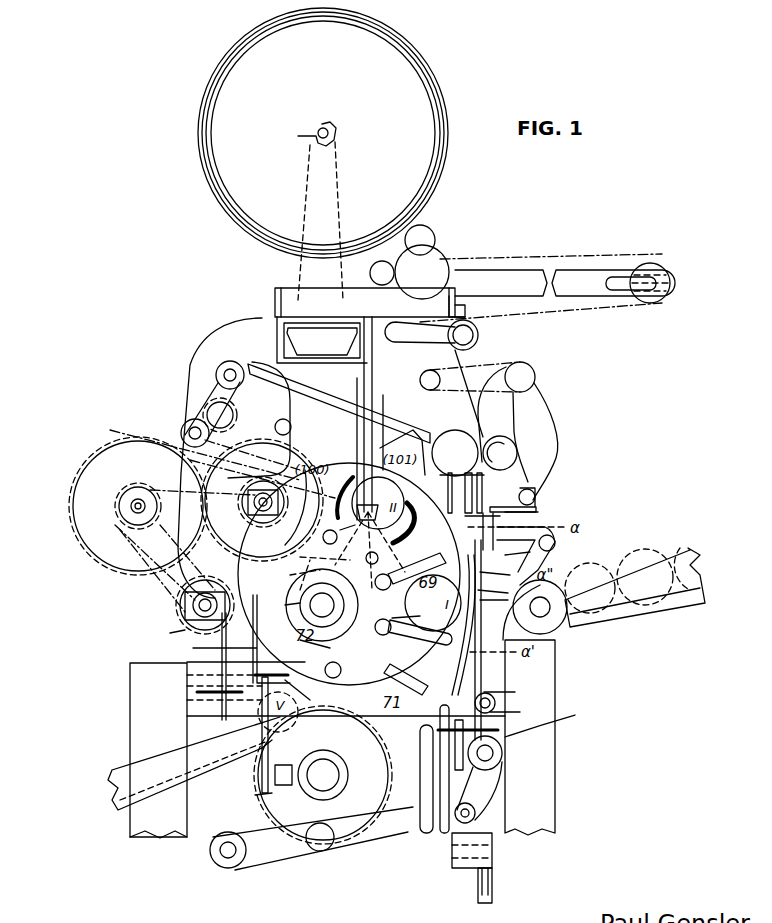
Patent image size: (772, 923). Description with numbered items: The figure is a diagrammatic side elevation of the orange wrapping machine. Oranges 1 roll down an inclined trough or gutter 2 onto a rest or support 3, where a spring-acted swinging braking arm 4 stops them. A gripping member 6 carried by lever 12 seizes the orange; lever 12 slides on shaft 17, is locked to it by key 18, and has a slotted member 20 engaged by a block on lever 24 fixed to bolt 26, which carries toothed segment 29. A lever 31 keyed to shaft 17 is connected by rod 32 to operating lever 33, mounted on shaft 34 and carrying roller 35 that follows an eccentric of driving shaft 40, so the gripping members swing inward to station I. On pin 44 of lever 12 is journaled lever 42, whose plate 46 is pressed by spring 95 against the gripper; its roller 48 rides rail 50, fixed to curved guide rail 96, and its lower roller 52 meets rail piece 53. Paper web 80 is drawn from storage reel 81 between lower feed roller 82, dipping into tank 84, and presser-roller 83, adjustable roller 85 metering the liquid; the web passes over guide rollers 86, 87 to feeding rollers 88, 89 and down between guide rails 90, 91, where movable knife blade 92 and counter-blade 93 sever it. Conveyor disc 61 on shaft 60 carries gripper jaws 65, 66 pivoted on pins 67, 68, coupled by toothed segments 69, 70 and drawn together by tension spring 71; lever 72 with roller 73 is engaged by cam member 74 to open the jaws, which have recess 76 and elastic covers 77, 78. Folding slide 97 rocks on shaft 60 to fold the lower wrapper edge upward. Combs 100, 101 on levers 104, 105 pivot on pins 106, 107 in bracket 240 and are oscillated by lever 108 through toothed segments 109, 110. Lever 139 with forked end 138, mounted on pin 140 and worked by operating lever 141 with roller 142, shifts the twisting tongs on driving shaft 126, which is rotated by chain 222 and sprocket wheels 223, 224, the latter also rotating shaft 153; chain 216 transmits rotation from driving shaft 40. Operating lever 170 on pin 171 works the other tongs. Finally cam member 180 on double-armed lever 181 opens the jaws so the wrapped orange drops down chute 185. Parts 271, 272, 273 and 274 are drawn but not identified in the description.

The storage reel 81 is at (448, 123).
The paper web 80 is at (528, 260).
The guide roller 86 is at (655, 263).
The upper presser-roller 83 is at (436, 234).
The lower feed roller 82 is at (435, 262).
The adjustable roller 85 is at (372, 278).
The tank 84 is at (458, 298).
The guide roller 87 is at (479, 333).
The feeding roller 88 is at (457, 425).
The feeding roller 89 is at (518, 455).
The stationary curved rail 96 is at (455, 453).
The guide rail 91 is at (448, 490).
The stationary counter-blade 93 is at (540, 508).
The movable knife blade 92 is at (538, 500).
The cover 77 is at (494, 525).
The guide rail 90 is at (545, 532).
The swinging braking arm 4 is at (552, 550).
The rail 50 is at (520, 554).
The vertical roller 48 is at (495, 571).
The press-plate 46 is at (494, 589).
The lever 42 is at (510, 612).
The gripping member 6 is at (550, 590).
The inclined trough or gutter 2 is at (678, 610).
The oranges 1 is at (600, 562).
The rest or support 3 is at (555, 652).
The bracket 240 is at (240, 332).
The pin 106 is at (215, 370).
The pin 107 is at (181, 430).
The lever 104 is at (340, 398).
The comb-like folding member 100 is at (408, 420).
The toothed segment 109 is at (238, 410).
The toothed segment 110 is at (225, 424).
The lever 108 is at (262, 469).
The belt 271 is at (193, 442).
The driving shaft 126 is at (300, 470).
The forked end 138 is at (290, 490).
The chain 216 is at (145, 580).
The pinion 272 is at (120, 515).
The shaft 273 is at (135, 505).
The chain 222 is at (165, 484).
The sprocket wheel 223 is at (180, 494).
The sprocket wheel 224 is at (175, 596).
The lever 105 is at (212, 548).
The driving shaft 153 is at (190, 608).
The lever 139 is at (160, 632).
The operating lever 170 is at (193, 648).
The shaft 60 is at (349, 574).
The double-armed lever 181 is at (287, 582).
The cam member 180 is at (277, 607).
The anti-friction roller 73 is at (296, 577).
The comb-like folding member 101 is at (312, 557).
The toothed segment 69 is at (330, 540).
The rotary disc 61 is at (326, 525).
The tension spring 71 is at (325, 498).
The lever 72 is at (412, 523).
The gripper jaw 65 is at (417, 558).
The pin 67 is at (378, 562).
The toothed segment 70 is at (392, 603).
The gripper jaw 66 is at (415, 617).
The recess 76 is at (420, 641).
The cam member 74 is at (316, 649).
The pin 68 is at (345, 678).
The folding slide 97 is at (413, 678).
The cover 78 is at (460, 626).
The slotted member 20 is at (470, 731).
The lever 31 is at (346, 711).
The pin 140 is at (308, 691).
The rail piece 53 is at (385, 742).
The lever 12 is at (483, 677).
The pin 44 is at (512, 692).
The spring 95 is at (515, 712).
The vertical roller 52 is at (551, 720).
The key 18 is at (500, 742).
The shaft 17 is at (502, 755).
The bolt 26 is at (492, 852).
The toothed segment 29 is at (492, 892).
The rod 32 is at (420, 772).
The lever 24 is at (440, 795).
The pin 171 is at (206, 750).
The chute 185 is at (192, 774).
The link 274 is at (245, 781).
The operating lever 141 is at (285, 757).
The anti-friction roller 142 is at (277, 807).
The driving shaft 40 is at (325, 792).
The shaft 34 is at (228, 868).
The anti-friction roller 35 is at (322, 851).
The operating lever 33 is at (375, 840).
The station I is at (433, 603).